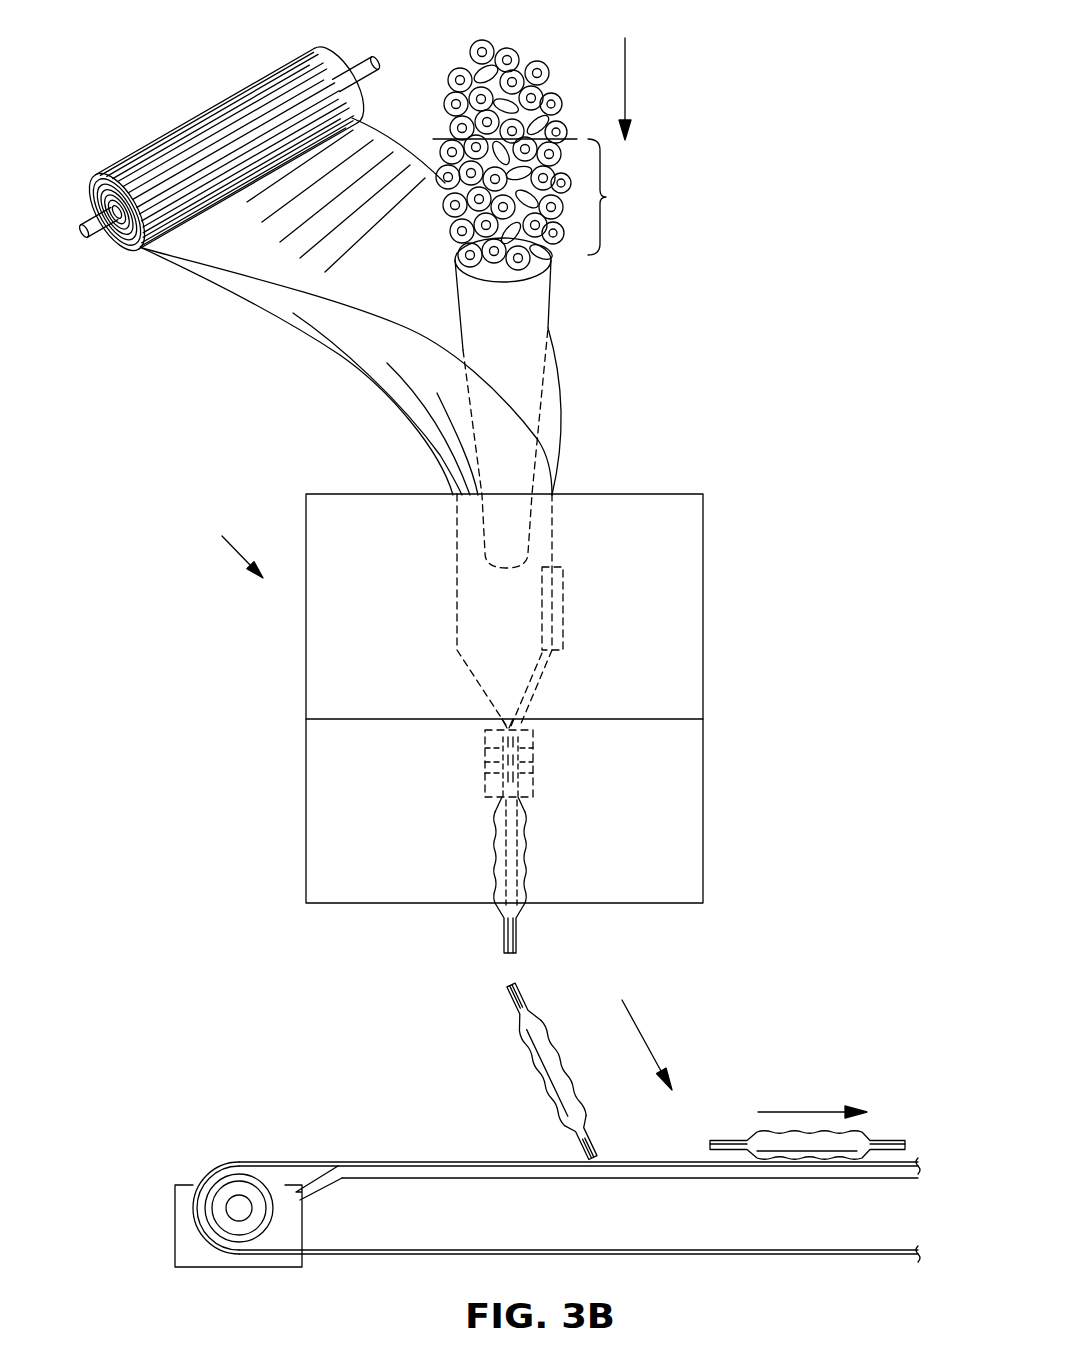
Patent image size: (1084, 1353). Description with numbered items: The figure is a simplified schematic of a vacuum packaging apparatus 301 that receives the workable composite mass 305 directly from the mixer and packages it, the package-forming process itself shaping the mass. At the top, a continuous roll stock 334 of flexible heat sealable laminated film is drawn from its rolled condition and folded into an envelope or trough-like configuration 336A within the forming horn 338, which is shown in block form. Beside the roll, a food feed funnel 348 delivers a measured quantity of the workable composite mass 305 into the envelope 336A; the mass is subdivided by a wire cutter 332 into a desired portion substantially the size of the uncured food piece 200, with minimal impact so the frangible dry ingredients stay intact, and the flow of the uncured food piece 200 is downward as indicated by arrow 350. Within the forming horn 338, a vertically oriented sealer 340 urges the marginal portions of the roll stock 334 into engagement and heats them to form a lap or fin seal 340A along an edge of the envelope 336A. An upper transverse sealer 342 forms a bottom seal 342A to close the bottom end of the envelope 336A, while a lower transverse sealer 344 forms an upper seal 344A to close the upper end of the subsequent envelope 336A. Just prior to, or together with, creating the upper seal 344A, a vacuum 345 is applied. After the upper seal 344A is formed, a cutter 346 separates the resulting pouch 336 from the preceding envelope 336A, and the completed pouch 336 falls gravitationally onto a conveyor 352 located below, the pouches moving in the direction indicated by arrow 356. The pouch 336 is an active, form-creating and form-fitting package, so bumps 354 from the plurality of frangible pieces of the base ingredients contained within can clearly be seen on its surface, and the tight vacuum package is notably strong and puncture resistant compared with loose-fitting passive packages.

The roll stock 334 is at (212, 119).
The workable composite mass 305 is at (518, 62).
The arrow 350 is at (628, 90).
The wire cutter 332 is at (554, 139).
The uncured food piece 200 is at (607, 197).
The food feed funnel 348 is at (538, 303).
The forming horn 338 is at (640, 494).
The vacuum packaging apparatus 301 is at (230, 543).
The envelope 336A is at (456, 585).
The vertically oriented sealer 340 is at (563, 600).
The fin seal 340A is at (535, 693).
The upper transverse sealer 342 is at (535, 735).
The lower transverse sealer 344 is at (535, 760).
The cutter 346 is at (535, 787).
The vacuum 345 is at (509, 760).
The bumps 354 is at (528, 840).
The bottom seal 342A is at (519, 928).
The pouch 336 is at (541, 980).
The upper seal 344A is at (523, 997).
The conveyor 352 is at (300, 1161).
The arrow 356 is at (650, 1044).